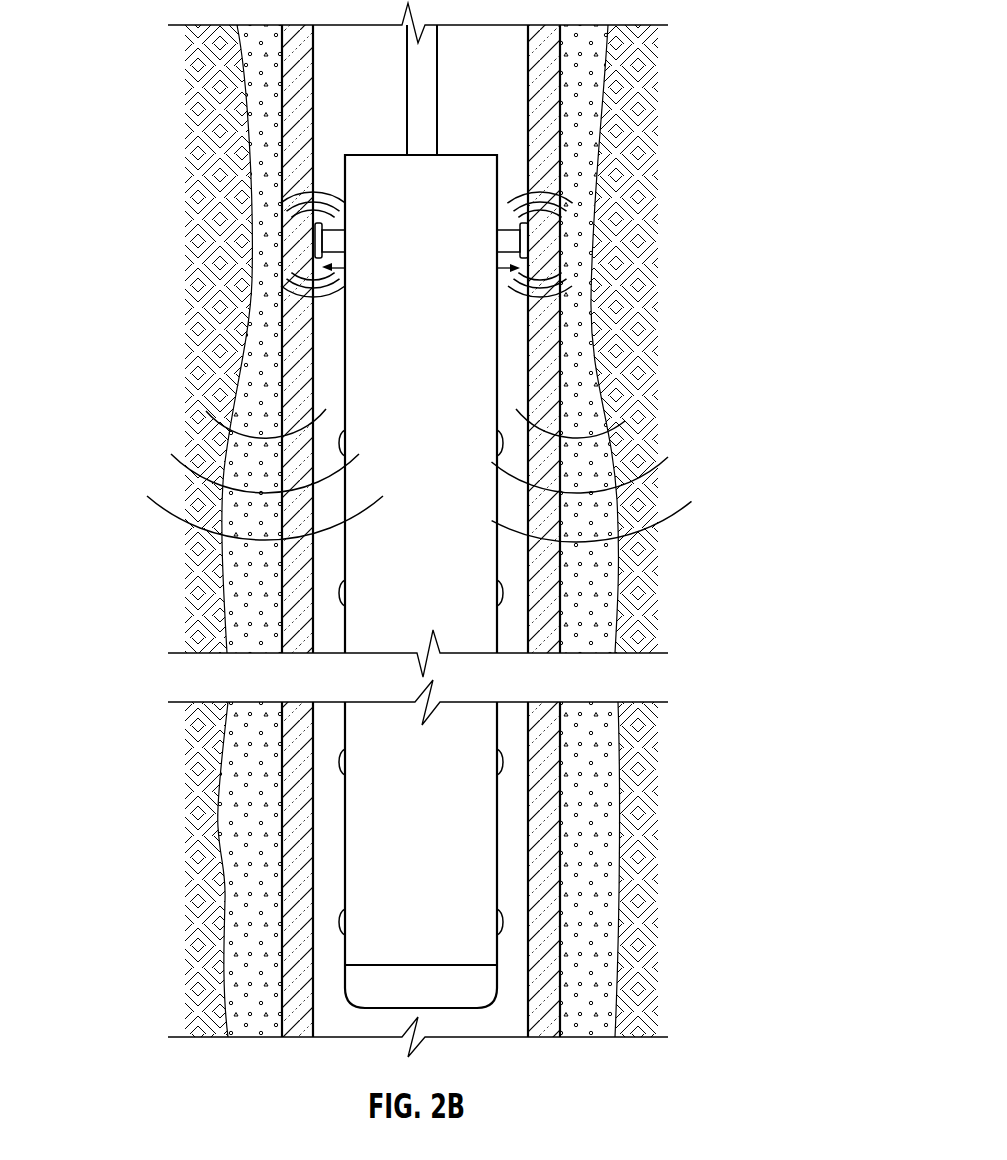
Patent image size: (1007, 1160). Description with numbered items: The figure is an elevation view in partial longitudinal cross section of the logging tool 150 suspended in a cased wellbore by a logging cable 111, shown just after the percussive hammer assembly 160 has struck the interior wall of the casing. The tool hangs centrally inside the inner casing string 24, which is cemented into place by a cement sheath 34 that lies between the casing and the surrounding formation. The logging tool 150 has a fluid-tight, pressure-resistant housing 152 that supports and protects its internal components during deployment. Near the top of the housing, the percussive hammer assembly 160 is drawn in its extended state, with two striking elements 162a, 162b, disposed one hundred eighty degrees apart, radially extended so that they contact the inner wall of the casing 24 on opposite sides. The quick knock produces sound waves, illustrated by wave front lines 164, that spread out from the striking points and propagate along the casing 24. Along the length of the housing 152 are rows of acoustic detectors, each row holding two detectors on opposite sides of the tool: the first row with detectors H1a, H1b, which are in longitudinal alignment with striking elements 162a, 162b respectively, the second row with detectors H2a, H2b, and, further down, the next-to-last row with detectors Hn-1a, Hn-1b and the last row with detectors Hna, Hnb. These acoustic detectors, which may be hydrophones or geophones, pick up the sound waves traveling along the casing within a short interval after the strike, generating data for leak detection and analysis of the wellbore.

The logging cable 111 is at (437, 89).
The cement sheath 34 is at (607, 104).
The inner casing string 24 is at (560, 168).
The striking element 162a is at (530, 241).
The striking element 162b is at (307, 243).
The percussive hammer assembly 160 is at (348, 242).
The logging tool 150 is at (543, 581).
The housing 152 is at (498, 813).
The wave front lines 164 is at (285, 292).
The acoustic detector H1a is at (495, 443).
The acoustic detector H1b is at (344, 443).
The acoustic detector H2a is at (495, 593).
The acoustic detector H2b is at (344, 593).
The acoustic detector Hn-1a is at (496, 762).
The acoustic detector Hn-1b is at (344, 762).
The acoustic detector Hna is at (496, 922).
The acoustic detector Hnb is at (344, 922).